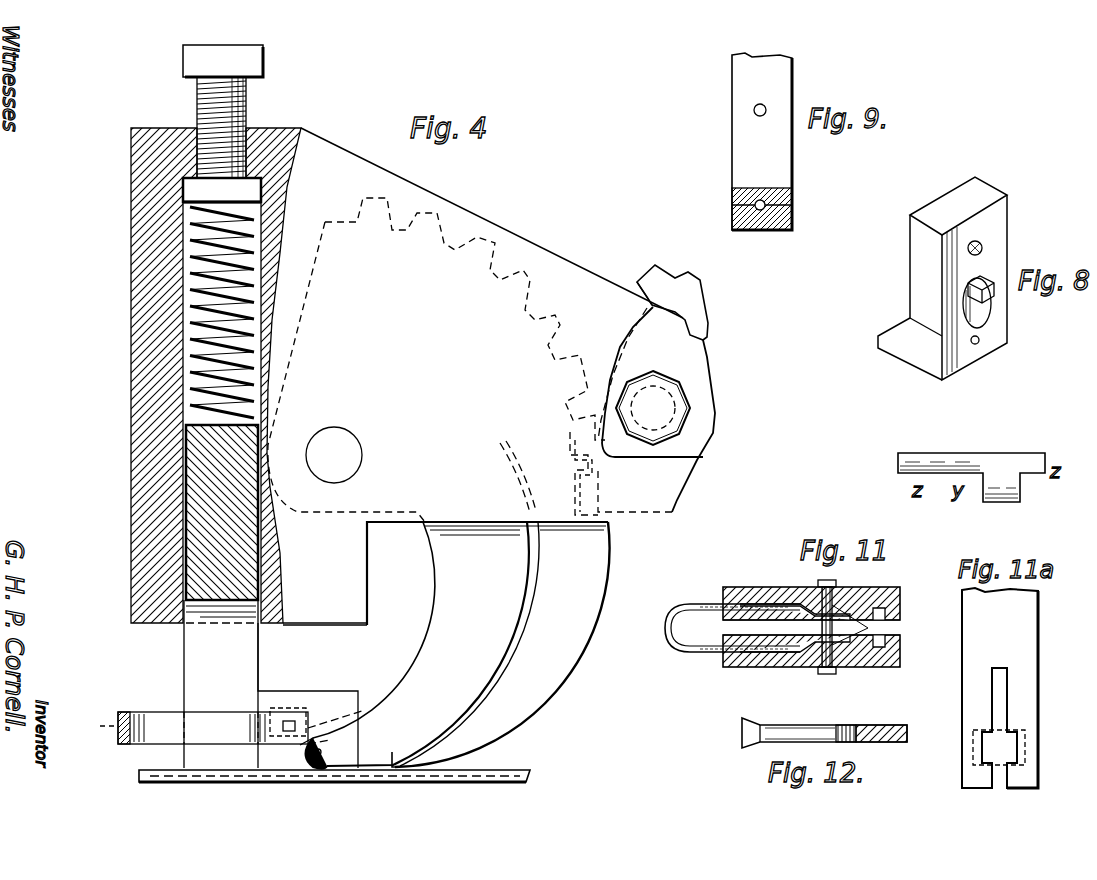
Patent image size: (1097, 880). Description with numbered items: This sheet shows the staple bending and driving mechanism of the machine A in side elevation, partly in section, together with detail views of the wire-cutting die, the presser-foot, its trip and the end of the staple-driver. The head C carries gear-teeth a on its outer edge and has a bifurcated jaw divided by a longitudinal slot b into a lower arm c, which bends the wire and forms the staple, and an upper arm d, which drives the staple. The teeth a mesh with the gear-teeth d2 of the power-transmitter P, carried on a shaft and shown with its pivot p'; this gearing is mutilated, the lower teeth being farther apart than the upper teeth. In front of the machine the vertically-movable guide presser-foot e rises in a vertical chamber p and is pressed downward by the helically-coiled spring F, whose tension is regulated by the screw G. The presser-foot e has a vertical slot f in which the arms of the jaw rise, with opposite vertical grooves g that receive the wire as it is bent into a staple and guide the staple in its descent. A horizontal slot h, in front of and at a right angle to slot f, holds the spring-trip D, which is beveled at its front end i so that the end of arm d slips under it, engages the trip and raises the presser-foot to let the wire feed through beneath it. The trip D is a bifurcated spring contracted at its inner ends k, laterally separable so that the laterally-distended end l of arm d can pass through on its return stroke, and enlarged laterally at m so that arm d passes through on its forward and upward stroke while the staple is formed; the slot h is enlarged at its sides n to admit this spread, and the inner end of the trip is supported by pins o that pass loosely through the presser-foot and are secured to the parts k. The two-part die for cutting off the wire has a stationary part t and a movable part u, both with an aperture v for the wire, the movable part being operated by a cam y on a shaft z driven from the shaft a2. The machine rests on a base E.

In FIG. 4, the screw G is at (226, 111).
In FIG. 4, the machine for bending and driving staples A is at (492, 214).
In FIG. 4, the gear-teeth a is at (486, 356).
In FIG. 9, the gear-teeth a is at (792, 212).
In FIG. 4, the shaft a2 is at (334, 455).
In FIG. 4, the head C is at (354, 372).
In FIG. 4, the helically-coiled spring F is at (190, 357).
In FIG. 4, the vertical chamber p is at (142, 406).
In FIG. 4, the guide presser-foot e is at (186, 487).
In FIG. 11A, the guide presser-foot e is at (1000, 688).
In FIG. 4, the vertical slot f is at (221, 684).
In FIG. 11, the vertical slot f is at (900, 627).
In FIG. 11A, the vertical slot f is at (996, 700).
In FIG. 4, the gear-teeth d2 is at (648, 280).
In FIG. 4, the power-transmitter P is at (690, 310).
In FIG. 4, the pawl pivot nut p' is at (656, 409).
In FIG. 4, the upper arm d is at (417, 645).
In FIG. 12, the upper arm d is at (883, 720).
In FIG. 4, the longitudinal slot b is at (534, 560).
In FIG. 4, the lower arm c is at (501, 644).
In FIG. 4, the spring-trip D is at (235, 715).
In FIG. 11, the spring-trip D is at (666, 612).
In FIG. 4, the pins o is at (290, 721).
In FIG. 11, the pins o is at (820, 690).
In FIG. 4, the beveled front end i is at (296, 740).
In FIG. 4, the laterally-distended end l is at (314, 760).
In FIG. 12, the laterally-distended end l is at (811, 733).
In FIG. 4, the base plate E is at (485, 762).
In FIG. 9, the stationary part of the die t is at (762, 141).
In FIG. 9, the aperture v is at (768, 228).
In FIG. 8, the aperture v is at (975, 344).
In FIG. 8, the movable part of the die u is at (1010, 350).
In FIG. 8, the cam y is at (983, 318).
In FIG. 8, the shaft z is at (994, 290).
In FIG. 11, the vertical grooves g is at (900, 600).
In FIG. 11, the inner ends of the trip k is at (840, 612).
In FIG. 11, the enlarged sides of slot n is at (790, 680).
In FIG. 11, the laterally enlarged portion of the trip m is at (699, 620).
In FIG. 11, the horizontal slot h is at (720, 652).
In FIG. 11A, the horizontal slot h is at (992, 750).